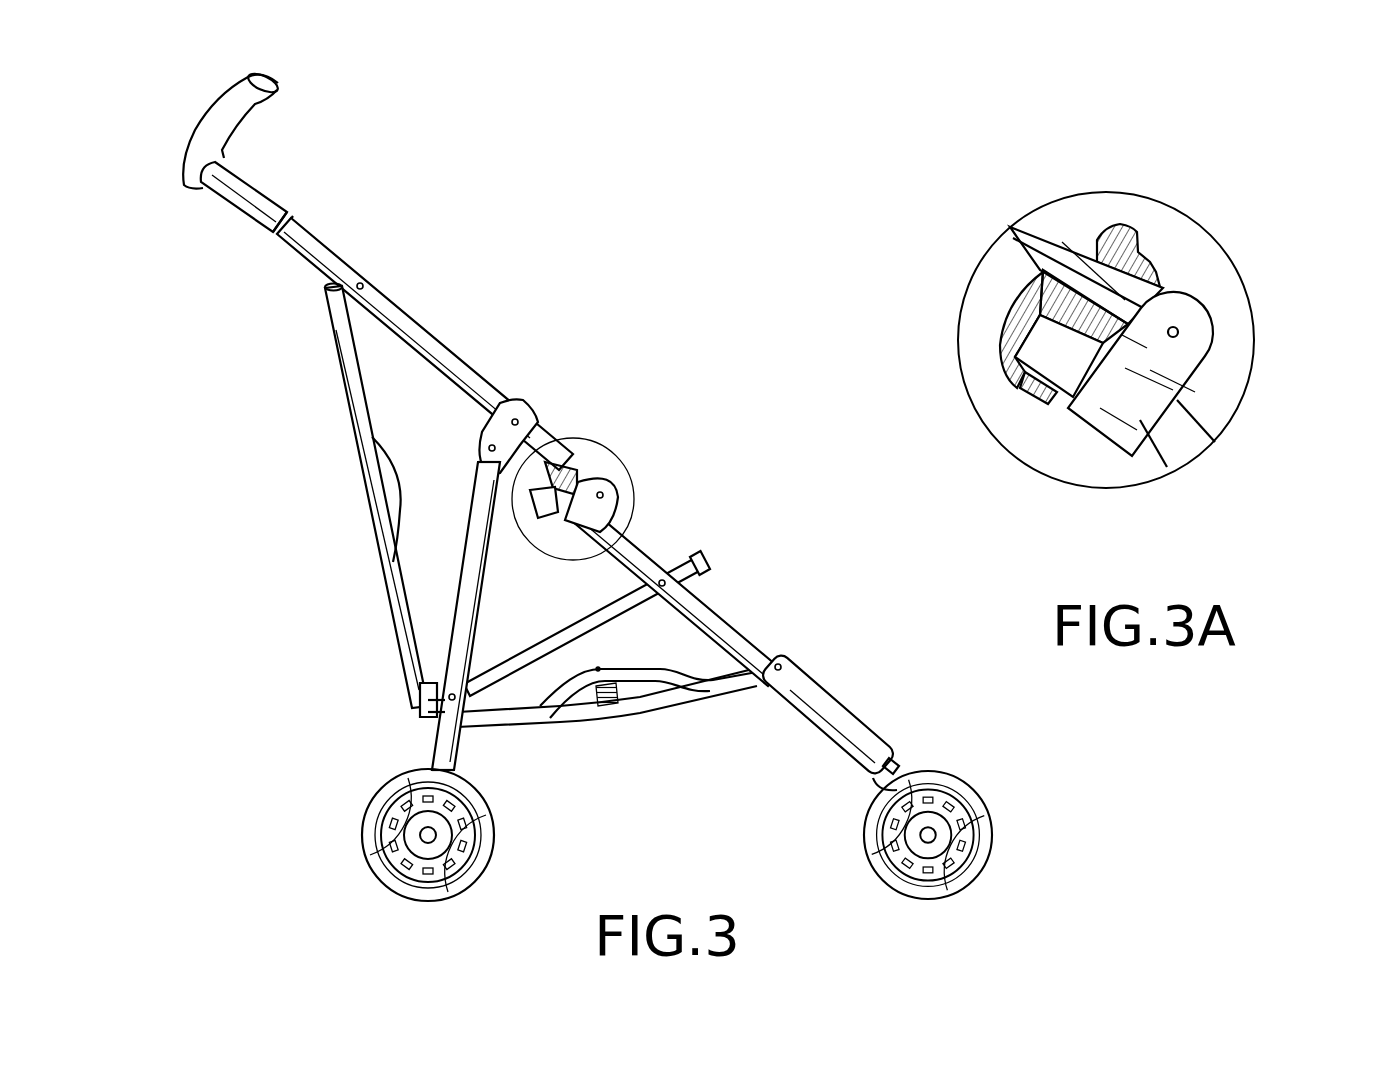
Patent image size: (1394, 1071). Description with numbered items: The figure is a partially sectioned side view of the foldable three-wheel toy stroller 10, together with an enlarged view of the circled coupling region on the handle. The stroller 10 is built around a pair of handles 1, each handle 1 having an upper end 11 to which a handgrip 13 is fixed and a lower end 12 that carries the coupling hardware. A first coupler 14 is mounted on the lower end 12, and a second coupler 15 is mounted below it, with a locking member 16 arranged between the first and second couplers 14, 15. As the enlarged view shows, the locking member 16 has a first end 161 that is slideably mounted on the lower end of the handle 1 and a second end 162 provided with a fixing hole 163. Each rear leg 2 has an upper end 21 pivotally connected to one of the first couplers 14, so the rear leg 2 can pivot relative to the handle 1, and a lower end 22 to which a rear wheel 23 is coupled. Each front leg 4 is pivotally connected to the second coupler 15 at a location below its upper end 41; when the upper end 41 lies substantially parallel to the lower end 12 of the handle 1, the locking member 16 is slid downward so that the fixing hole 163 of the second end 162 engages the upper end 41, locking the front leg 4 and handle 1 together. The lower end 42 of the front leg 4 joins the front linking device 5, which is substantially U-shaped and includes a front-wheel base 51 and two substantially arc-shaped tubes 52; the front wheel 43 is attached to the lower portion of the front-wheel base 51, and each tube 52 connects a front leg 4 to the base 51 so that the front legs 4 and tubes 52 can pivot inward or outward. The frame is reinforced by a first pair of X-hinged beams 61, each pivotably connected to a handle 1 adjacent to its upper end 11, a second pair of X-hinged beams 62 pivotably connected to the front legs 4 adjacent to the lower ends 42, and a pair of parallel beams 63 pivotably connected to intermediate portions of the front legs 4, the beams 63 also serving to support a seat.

In FIG. 3, the foldable three-wheel stroller 10 is at (541, 250).
In FIG. 3, the handle 1 is at (413, 323).
In FIG. 3, the upper end 11 is at (288, 222).
In FIG. 3, the lower end 12 is at (548, 447).
In FIG. 3A, the lower end 12 is at (1055, 217).
In FIG. 3, the handgrip 13 is at (243, 176).
In FIG. 3, the first coupler 14 is at (523, 410).
In FIG. 3, the second coupler 15 is at (593, 513).
In FIG. 3A, the second coupler 15 is at (1205, 333).
In FIG. 3A, the locking member 16 is at (1032, 310).
In FIG. 3A, the first end 161 is at (1121, 232).
In FIG. 3A, the second end 162 is at (1015, 388).
In FIG. 3, the fixing hole 163 is at (575, 484).
In FIG. 3A, the fixing hole 163 is at (1052, 405).
In FIG. 3, the rear leg 2 is at (463, 583).
In FIG. 3, the upper end 21 is at (485, 470).
In FIG. 3, the lower end 22 is at (442, 757).
In FIG. 3, the rear wheel 23 is at (388, 875).
In FIG. 3, the front leg 4 is at (702, 611).
In FIG. 3, the upper end 41 is at (552, 505).
In FIG. 3A, the upper end 41 is at (1066, 362).
In FIG. 3, the lower end 42 is at (754, 666).
In FIG. 3, the front wheel 43 is at (987, 824).
In FIG. 3, the front linking device 5 is at (803, 755).
In FIG. 3, the front-wheel base 51 is at (872, 785).
In FIG. 3, the arc-shaped tube 52 is at (868, 731).
In FIG. 3, the X-hinged beam 61 is at (362, 478).
In FIG. 3, the X-hinged beam 62 is at (689, 680).
In FIG. 3, the parallel beam 63 is at (530, 650).